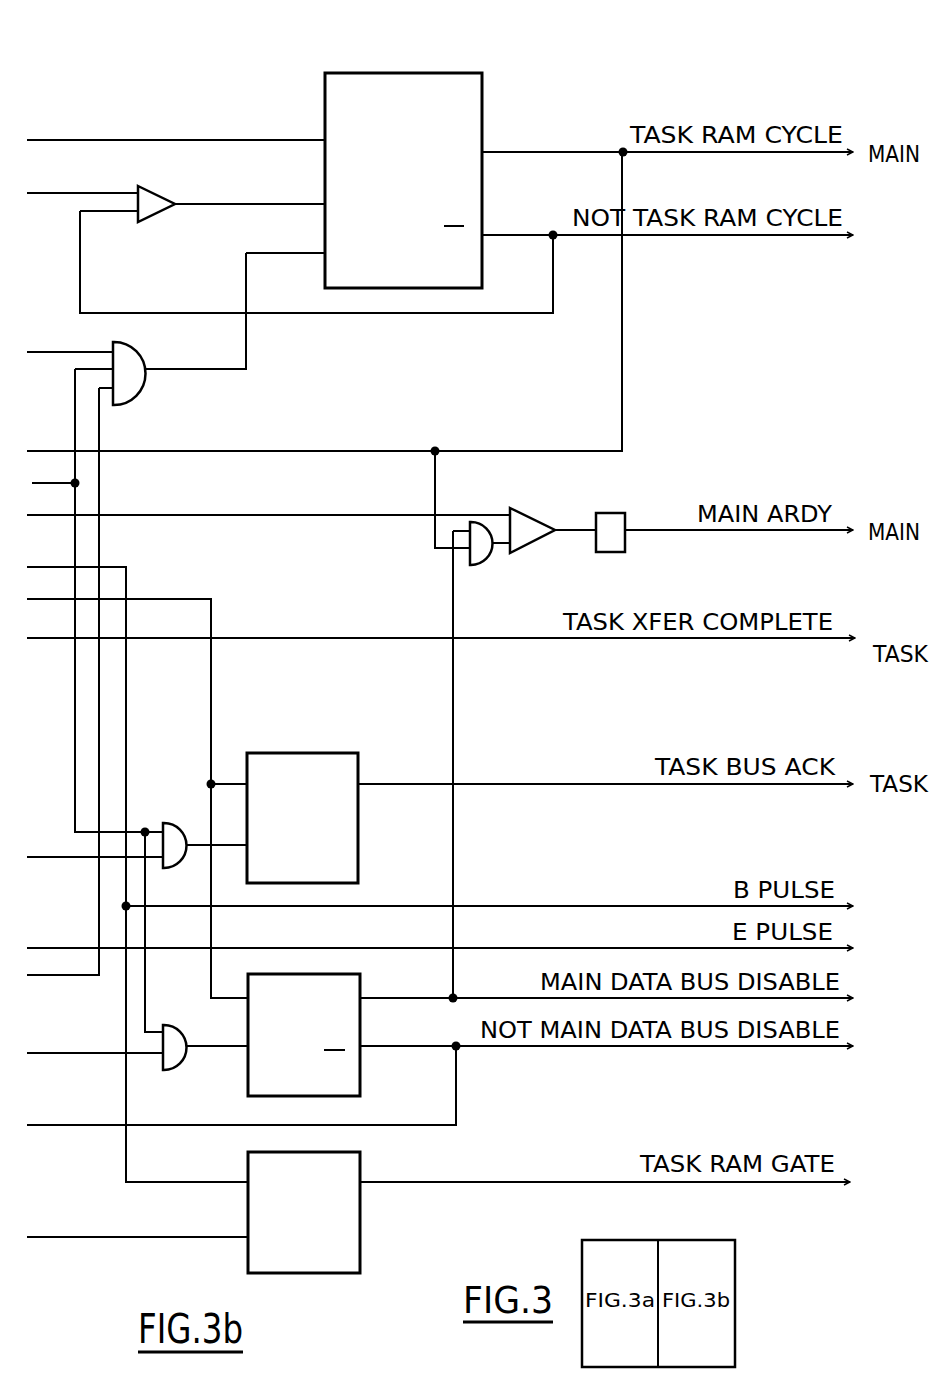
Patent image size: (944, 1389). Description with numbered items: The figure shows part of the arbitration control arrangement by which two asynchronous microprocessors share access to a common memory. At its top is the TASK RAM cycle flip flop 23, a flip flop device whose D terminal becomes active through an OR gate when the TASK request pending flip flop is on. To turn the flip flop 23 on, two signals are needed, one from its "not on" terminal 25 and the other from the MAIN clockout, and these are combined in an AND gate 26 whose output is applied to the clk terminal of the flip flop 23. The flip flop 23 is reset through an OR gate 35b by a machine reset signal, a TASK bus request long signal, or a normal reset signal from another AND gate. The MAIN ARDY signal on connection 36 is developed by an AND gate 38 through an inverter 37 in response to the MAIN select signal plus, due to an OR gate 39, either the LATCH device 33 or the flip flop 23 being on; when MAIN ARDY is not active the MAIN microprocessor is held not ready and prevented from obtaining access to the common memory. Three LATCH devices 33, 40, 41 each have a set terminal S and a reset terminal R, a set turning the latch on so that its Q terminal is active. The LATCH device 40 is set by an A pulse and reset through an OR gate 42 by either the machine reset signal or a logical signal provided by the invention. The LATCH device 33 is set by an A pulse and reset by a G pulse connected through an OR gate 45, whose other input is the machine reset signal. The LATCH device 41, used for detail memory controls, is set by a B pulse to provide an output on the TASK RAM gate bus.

The TASK RAM cycle flip flop 23 is at (482, 98).
The not on terminal 25 is at (500, 233).
The AND gate 26 is at (153, 192).
The OR gate 35b is at (221, 357).
The MAIN ARDY connection 36 is at (847, 533).
The inverter 37 is at (610, 512).
The AND gate 38 is at (523, 508).
The OR gate 39 is at (477, 563).
The LATCH device 40 is at (288, 753).
The OR gate 42 is at (182, 825).
The OR gate 45 is at (188, 1032).
The LATCH device 33 is at (360, 1083).
The LATCH device 41 is at (360, 1235).